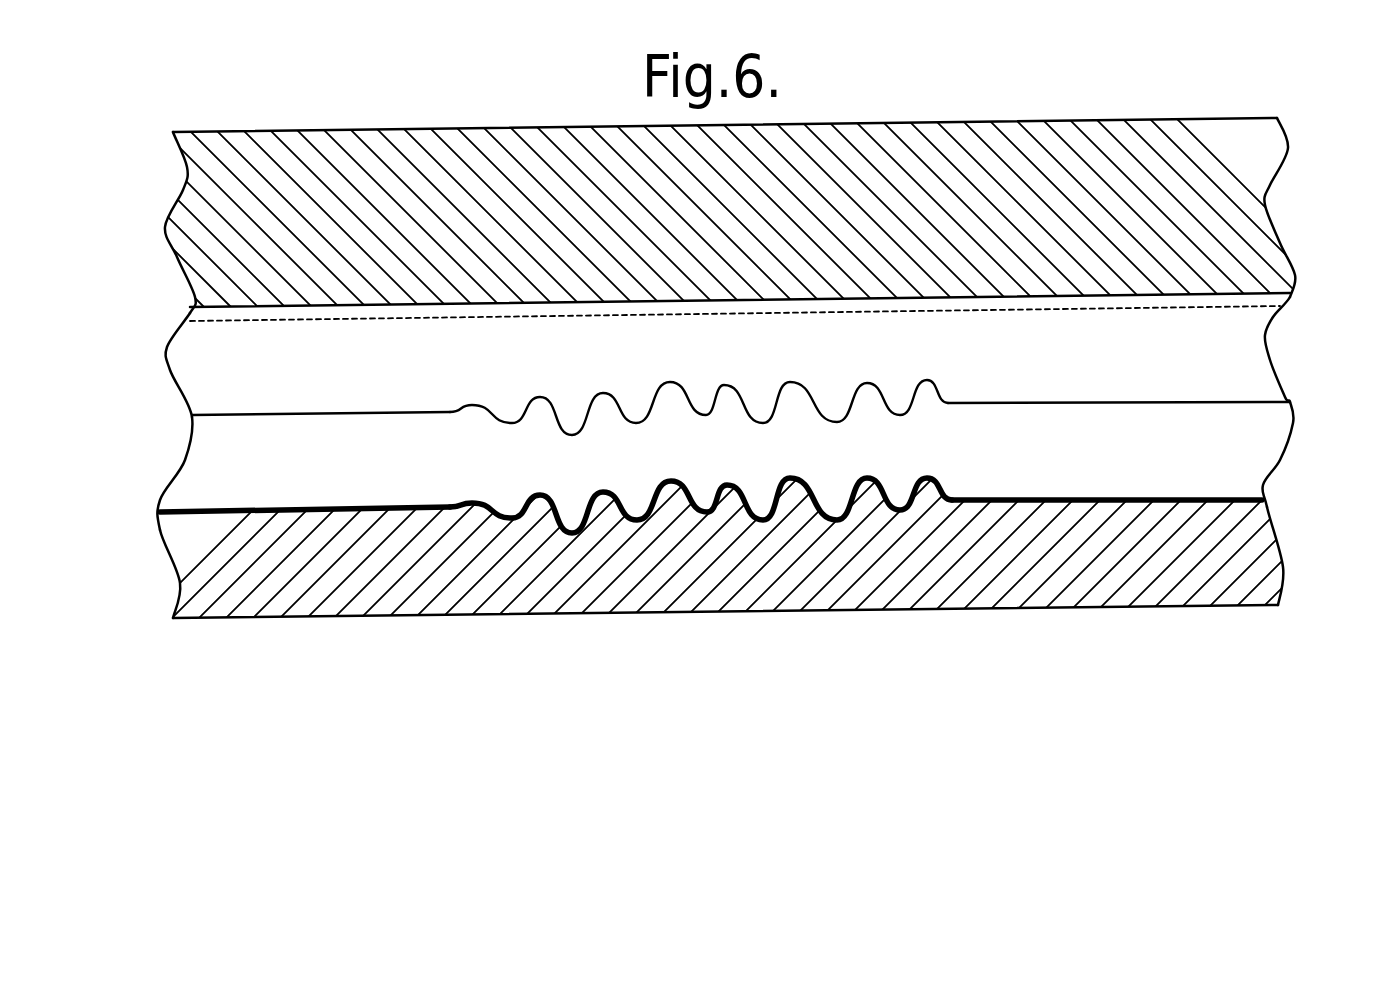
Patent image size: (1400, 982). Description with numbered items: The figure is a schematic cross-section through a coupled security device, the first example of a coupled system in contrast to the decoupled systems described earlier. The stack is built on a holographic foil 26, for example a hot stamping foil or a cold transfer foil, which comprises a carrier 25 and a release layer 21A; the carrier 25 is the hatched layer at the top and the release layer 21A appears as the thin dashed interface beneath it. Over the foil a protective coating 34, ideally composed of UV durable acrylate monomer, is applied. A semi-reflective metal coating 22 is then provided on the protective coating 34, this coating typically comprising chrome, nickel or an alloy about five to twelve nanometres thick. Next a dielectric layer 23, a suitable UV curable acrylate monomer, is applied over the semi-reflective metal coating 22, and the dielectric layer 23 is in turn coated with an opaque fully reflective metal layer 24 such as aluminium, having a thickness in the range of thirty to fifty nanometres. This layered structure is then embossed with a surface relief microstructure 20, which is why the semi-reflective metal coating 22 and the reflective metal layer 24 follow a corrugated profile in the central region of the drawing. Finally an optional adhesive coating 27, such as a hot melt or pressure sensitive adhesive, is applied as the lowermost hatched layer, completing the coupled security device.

The carrier 25 is at (195, 200).
The holographic foil 26 is at (1262, 192).
The release layer 21A is at (1278, 302).
The protective coating 34 is at (190, 372).
The semi-reflective metal coating 22 is at (1261, 392).
The dielectric layer 23 is at (210, 492).
The opaque fully reflective metal layer 24 is at (1261, 488).
The surface relief microstructure 20 is at (948, 483).
The adhesive coating 27 is at (236, 593).